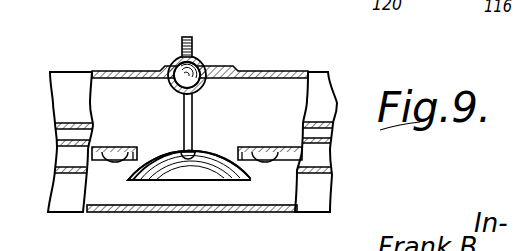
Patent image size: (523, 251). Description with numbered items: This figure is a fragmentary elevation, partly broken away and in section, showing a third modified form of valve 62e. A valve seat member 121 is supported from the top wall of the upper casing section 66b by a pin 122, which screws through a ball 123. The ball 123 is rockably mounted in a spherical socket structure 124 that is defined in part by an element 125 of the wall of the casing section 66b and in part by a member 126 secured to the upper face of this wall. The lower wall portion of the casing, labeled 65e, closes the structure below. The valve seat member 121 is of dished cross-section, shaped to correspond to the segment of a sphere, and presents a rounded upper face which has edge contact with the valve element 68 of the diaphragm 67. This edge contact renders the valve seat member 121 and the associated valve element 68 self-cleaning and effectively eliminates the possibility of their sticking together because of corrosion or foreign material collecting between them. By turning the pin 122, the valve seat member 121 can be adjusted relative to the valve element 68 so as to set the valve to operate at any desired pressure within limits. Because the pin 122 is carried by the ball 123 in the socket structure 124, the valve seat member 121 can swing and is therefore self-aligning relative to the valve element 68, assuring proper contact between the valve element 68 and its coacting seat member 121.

The valve 62e is at (77, 70).
The upper casing section 66b is at (283, 71).
The member 126 is at (161, 66).
The bottom plate 65e is at (208, 213).
The element 125 is at (209, 86).
The spherical socket structure 124 is at (167, 62).
The ball 123 is at (203, 62).
The pin 122 is at (193, 117).
The diaphragm 67 is at (117, 146).
The valve element 68 is at (163, 149).
The valve seat member 121 is at (172, 166).